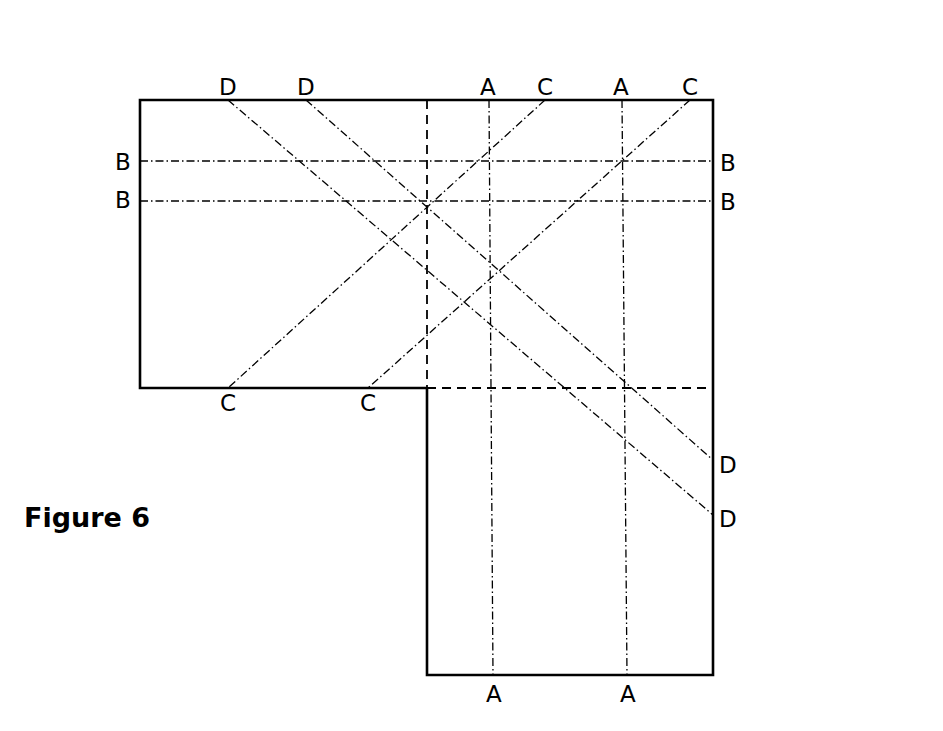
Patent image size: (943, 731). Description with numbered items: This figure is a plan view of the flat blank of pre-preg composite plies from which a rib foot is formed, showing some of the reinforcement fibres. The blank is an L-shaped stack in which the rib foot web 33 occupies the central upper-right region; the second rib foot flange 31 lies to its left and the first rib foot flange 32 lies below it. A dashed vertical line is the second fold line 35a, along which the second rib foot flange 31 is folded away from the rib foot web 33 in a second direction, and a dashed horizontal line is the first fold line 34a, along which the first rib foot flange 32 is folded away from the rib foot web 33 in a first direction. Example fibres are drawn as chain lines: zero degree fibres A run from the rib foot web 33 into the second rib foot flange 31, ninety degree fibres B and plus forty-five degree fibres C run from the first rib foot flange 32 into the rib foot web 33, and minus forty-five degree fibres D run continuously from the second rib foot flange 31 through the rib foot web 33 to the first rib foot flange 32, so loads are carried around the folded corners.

The second rib foot flange 31 is at (283, 244).
The first rib foot flange 32 is at (570, 531).
The rib foot web 33 is at (570, 244).
The first fold line 34a is at (663, 383).
The second fold line 35a is at (427, 148).